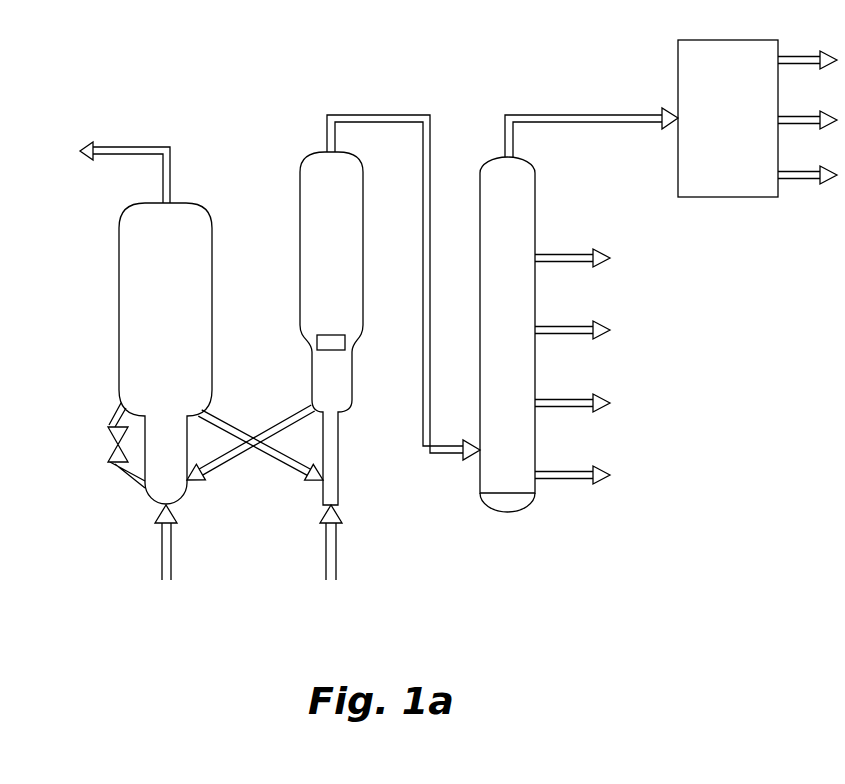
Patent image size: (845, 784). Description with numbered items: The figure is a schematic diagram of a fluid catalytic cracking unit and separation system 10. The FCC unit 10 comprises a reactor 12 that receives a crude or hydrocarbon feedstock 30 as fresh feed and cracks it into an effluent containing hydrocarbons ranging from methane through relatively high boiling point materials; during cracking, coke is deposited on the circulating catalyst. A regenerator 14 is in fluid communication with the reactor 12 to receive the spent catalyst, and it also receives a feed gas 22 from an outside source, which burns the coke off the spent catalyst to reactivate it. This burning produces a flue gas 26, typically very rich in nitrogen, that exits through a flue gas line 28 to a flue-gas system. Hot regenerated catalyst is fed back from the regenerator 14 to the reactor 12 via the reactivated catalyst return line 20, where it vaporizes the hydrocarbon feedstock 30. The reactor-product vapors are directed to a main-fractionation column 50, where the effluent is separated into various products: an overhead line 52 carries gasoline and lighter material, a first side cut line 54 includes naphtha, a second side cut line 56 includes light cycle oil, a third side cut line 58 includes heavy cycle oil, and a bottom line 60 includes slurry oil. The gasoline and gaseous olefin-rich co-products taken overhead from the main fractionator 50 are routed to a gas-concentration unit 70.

The fluid catalytic cracking unit and separation system 10 is at (163, 72).
The reactor 12 is at (343, 260).
The regenerator 14 is at (176, 327).
The reactivated catalyst return line 20 is at (232, 418).
The feed gas 22 is at (172, 548).
The flue gas 26 is at (83, 146).
The flue gas line 28 is at (129, 146).
The hydrocarbon feedstock 30 is at (337, 548).
The main-fractionation column 50 is at (519, 340).
The overhead line 52 is at (503, 137).
The first side cut line 54 is at (586, 260).
The second side cut line 56 is at (586, 332).
The third side cut line 58 is at (586, 405).
The bottom line 60 is at (586, 477).
The gas-concentration unit 70 is at (738, 130).